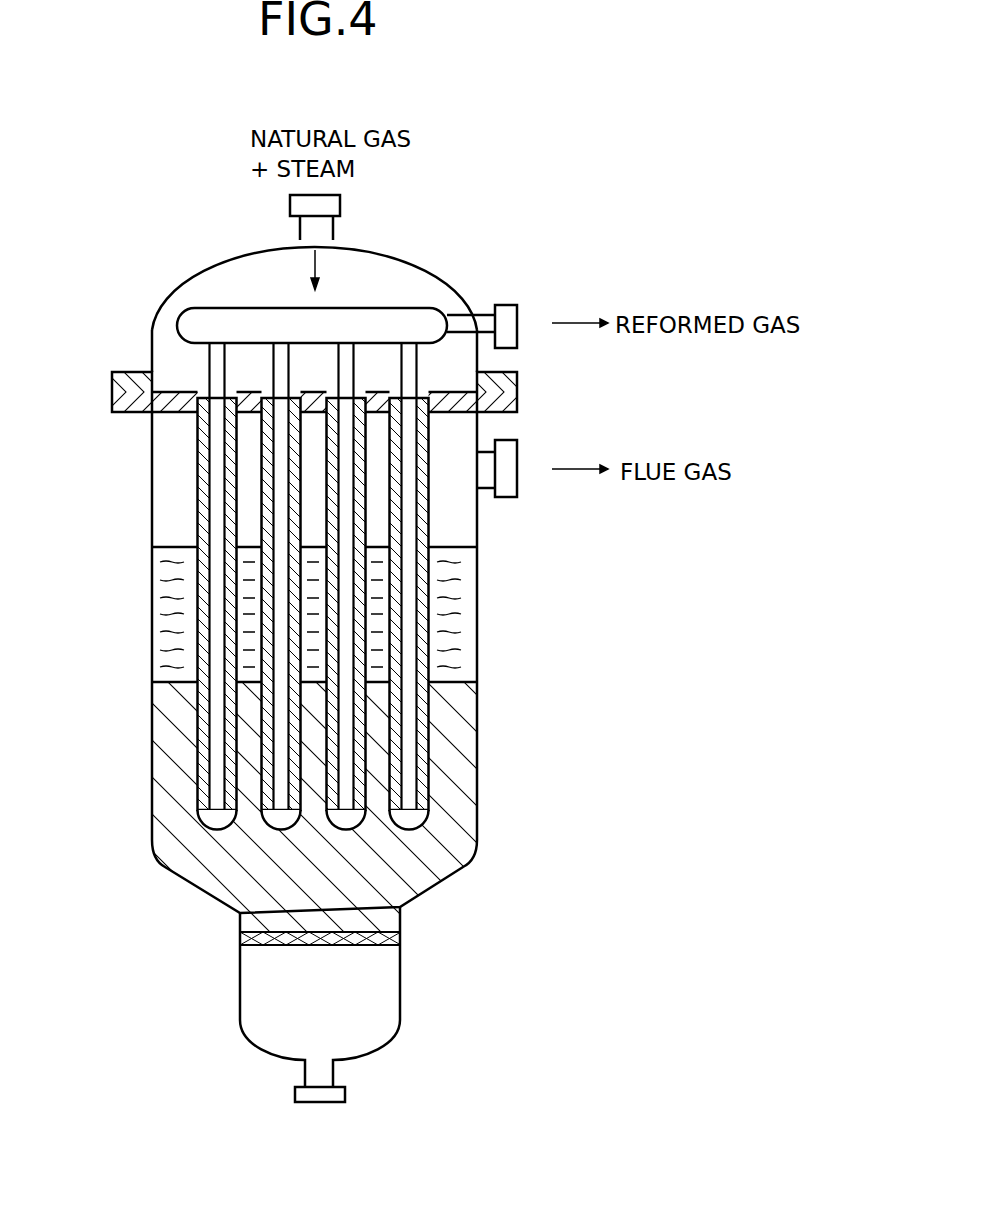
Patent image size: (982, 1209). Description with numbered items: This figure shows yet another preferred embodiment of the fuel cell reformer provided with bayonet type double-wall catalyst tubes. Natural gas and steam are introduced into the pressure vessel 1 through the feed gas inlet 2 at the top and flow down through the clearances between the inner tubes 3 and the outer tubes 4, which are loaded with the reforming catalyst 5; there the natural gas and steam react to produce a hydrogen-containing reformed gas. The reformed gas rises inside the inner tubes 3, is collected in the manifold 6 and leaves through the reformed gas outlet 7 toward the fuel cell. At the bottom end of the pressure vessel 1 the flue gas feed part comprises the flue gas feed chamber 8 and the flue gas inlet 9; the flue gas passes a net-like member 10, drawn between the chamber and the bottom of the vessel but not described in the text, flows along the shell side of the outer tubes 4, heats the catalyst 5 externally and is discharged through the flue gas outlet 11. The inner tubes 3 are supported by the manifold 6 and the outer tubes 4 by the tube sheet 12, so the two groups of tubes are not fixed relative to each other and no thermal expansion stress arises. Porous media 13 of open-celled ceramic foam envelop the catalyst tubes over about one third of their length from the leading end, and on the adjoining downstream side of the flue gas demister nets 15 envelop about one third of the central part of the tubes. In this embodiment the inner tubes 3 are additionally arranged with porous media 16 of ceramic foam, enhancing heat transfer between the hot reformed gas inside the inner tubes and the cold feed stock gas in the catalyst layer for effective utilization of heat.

The pressure vessel 1 is at (477, 717).
The feed gas inlet 2 is at (341, 205).
The inner tubes 3 is at (210, 697).
The outer tubes 4 is at (190, 578).
The reforming catalyst 5 is at (203, 498).
The manifold 6 is at (218, 308).
The reformed gas outlet 7 is at (502, 305).
The flue gas feed chamber 8 is at (390, 985).
The flue gas inlet 9 is at (295, 1093).
The mesh screen 10 is at (266, 946).
The flue gas outlet 11 is at (508, 497).
The tube sheet 12 is at (177, 413).
The porous media 13 is at (463, 860).
The demister nets 15 is at (465, 640).
The porous media 16 is at (412, 788).